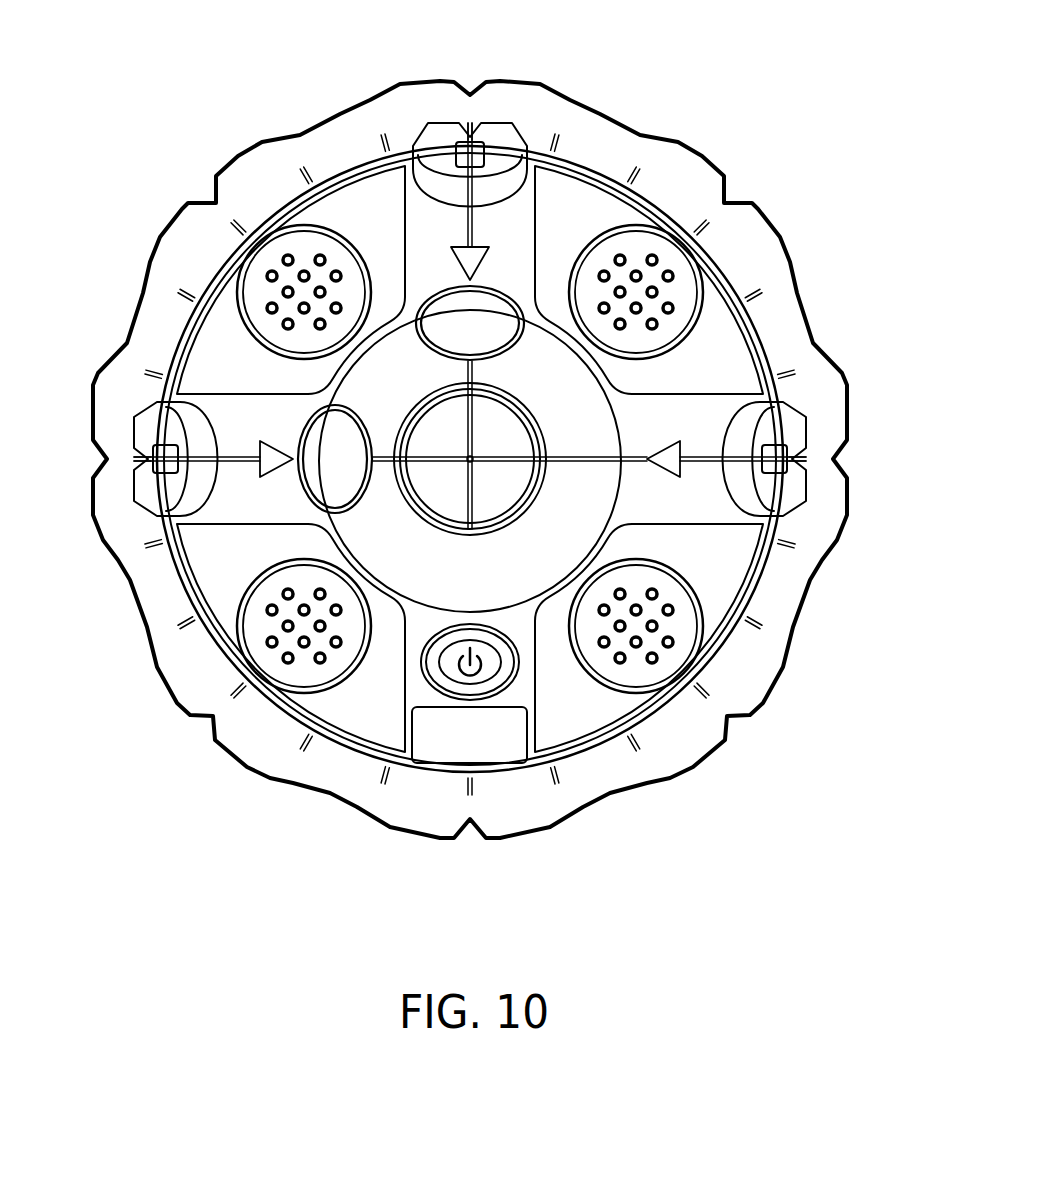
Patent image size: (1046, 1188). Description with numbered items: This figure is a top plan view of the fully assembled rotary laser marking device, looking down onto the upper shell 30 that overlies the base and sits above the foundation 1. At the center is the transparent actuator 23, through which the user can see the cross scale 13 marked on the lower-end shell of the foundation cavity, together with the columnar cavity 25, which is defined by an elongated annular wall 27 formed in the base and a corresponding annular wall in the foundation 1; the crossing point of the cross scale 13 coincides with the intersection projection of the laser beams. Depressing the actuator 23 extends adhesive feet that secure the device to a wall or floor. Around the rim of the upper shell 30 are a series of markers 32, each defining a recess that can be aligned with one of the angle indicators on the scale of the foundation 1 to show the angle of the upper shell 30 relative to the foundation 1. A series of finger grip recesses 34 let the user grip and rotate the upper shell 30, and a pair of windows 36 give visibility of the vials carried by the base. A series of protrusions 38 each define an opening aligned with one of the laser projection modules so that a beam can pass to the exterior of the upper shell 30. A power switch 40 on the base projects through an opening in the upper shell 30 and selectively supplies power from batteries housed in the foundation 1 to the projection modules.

The foundation 1 is at (656, 131).
The cross scale 13 is at (468, 493).
The transparent actuator 23 is at (507, 420).
The columnar cavity 25 is at (437, 425).
The elongated annular wall 27 is at (512, 502).
The upper shell 30 is at (693, 411).
The marker 32 is at (495, 122).
The finger grip recess 34 is at (300, 310).
The window 36 is at (482, 318).
The protrusion 38 is at (503, 160).
The power switch 40 is at (683, 627).